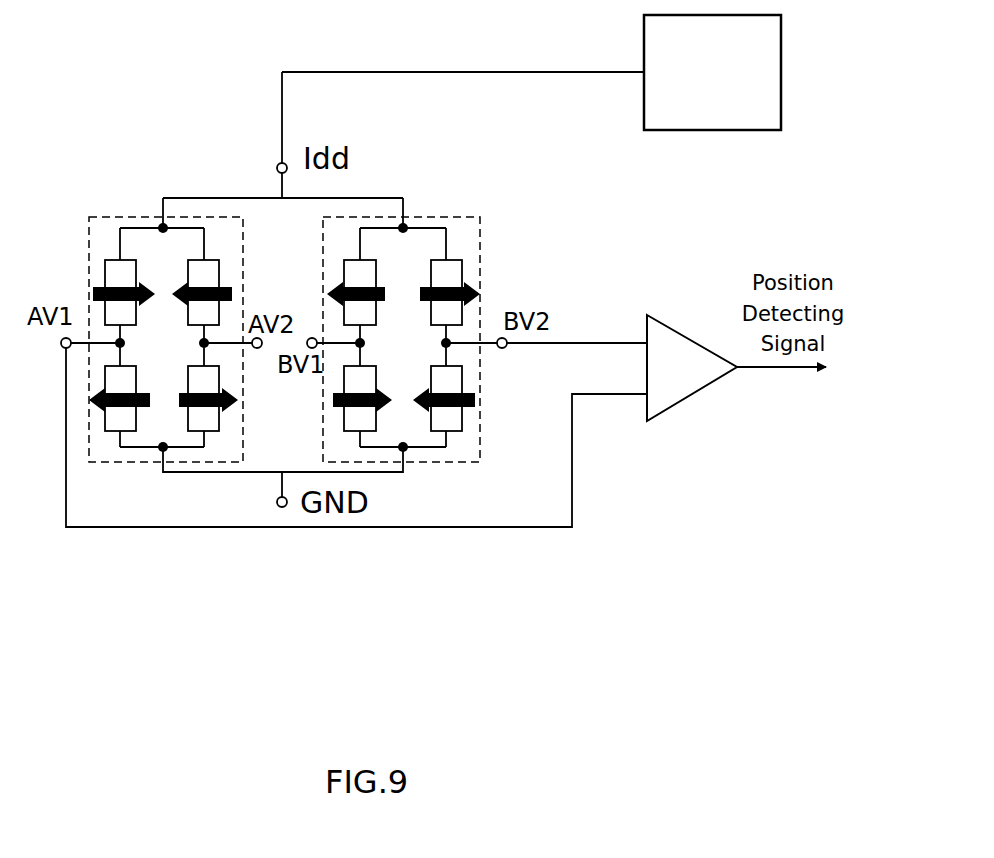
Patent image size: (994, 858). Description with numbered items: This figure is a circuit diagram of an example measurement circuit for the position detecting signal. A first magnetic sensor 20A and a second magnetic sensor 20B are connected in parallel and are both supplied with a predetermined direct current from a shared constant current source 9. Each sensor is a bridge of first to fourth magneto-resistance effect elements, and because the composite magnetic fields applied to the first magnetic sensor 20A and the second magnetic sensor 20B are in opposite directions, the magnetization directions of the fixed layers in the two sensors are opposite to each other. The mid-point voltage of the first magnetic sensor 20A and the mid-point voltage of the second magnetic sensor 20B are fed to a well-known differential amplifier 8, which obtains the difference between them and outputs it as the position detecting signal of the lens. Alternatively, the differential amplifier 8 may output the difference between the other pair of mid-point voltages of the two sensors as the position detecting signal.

The first magnetic sensor 20A is at (97, 216).
The second magnetic sensor 20B is at (477, 216).
The differential amplifier 8 is at (693, 342).
The constant current source 9 is at (681, 132).